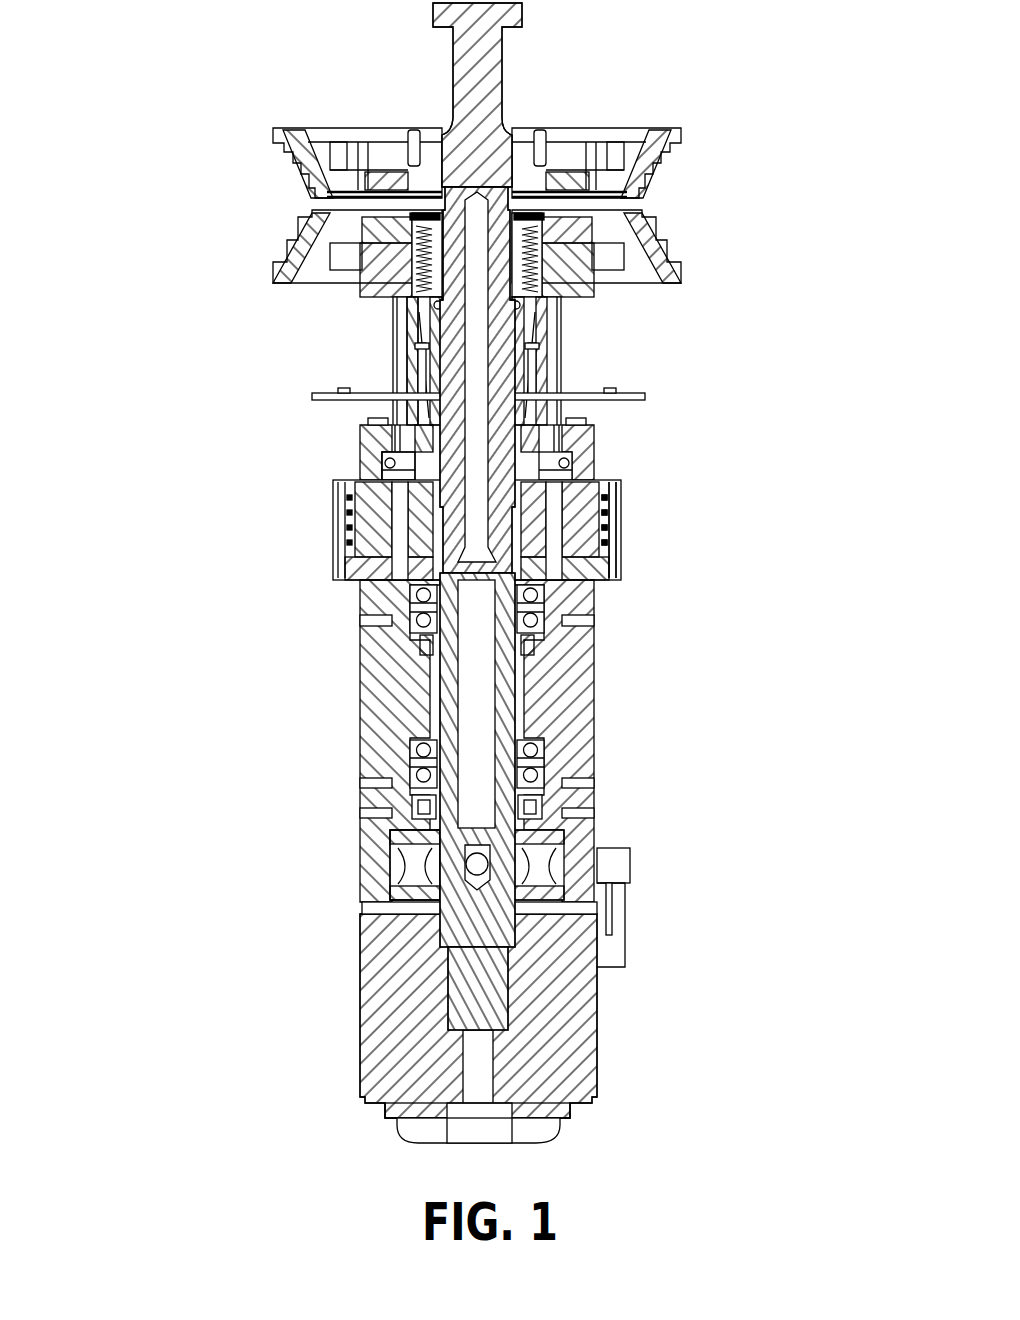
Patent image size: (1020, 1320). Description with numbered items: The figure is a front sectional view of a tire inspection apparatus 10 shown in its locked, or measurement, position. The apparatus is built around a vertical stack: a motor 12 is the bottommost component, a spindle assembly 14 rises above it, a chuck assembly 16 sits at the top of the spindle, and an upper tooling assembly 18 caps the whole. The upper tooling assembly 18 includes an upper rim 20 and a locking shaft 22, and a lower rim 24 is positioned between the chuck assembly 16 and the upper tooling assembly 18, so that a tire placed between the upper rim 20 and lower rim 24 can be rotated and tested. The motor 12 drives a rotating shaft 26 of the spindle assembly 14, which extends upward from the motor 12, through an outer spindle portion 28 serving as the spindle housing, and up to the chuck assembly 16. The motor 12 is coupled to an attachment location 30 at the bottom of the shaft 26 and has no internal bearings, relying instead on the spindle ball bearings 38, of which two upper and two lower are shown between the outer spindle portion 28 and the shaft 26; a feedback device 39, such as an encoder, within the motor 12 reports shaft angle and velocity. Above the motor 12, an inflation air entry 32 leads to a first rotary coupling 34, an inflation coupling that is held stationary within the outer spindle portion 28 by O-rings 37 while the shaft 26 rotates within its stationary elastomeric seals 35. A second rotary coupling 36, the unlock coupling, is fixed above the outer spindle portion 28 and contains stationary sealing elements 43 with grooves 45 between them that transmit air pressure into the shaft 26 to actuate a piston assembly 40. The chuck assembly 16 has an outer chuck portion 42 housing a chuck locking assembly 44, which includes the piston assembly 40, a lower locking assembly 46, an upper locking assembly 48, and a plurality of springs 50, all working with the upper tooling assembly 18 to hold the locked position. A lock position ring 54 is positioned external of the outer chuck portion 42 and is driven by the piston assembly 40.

The tire inspection apparatus 10 is at (462, 571).
The motor 12 is at (375, 978).
The spindle assembly 14 is at (518, 789).
The chuck assembly 16 is at (605, 443).
The upper tooling assembly 18 is at (489, 150).
The upper rim 20 is at (268, 168).
The locking shaft 22 is at (508, 88).
The lower rim 24 is at (688, 262).
The rotating shaft 26 is at (503, 722).
The outer spindle portion 28 is at (348, 672).
The attachment location 30 is at (510, 985).
The inflation air entry 32 is at (645, 870).
The first rotary coupling 34 is at (548, 880).
The stationary elastomeric seals 35 is at (420, 902).
The second rotary coupling 36 is at (330, 518).
The O-rings 37 is at (382, 848).
The ball bearings 38 is at (555, 593).
The feedback device 39 is at (535, 1097).
The piston assembly 40 is at (358, 455).
The outer chuck portion 42 is at (383, 306).
The sealing elements 43 is at (622, 480).
The chuck locking assembly 44 is at (400, 342).
The grooves 45 is at (615, 510).
The lower locking assembly 46 is at (548, 380).
The upper locking assembly 48 is at (547, 332).
The springs 50 is at (540, 245).
The lock position ring 54 is at (653, 393).